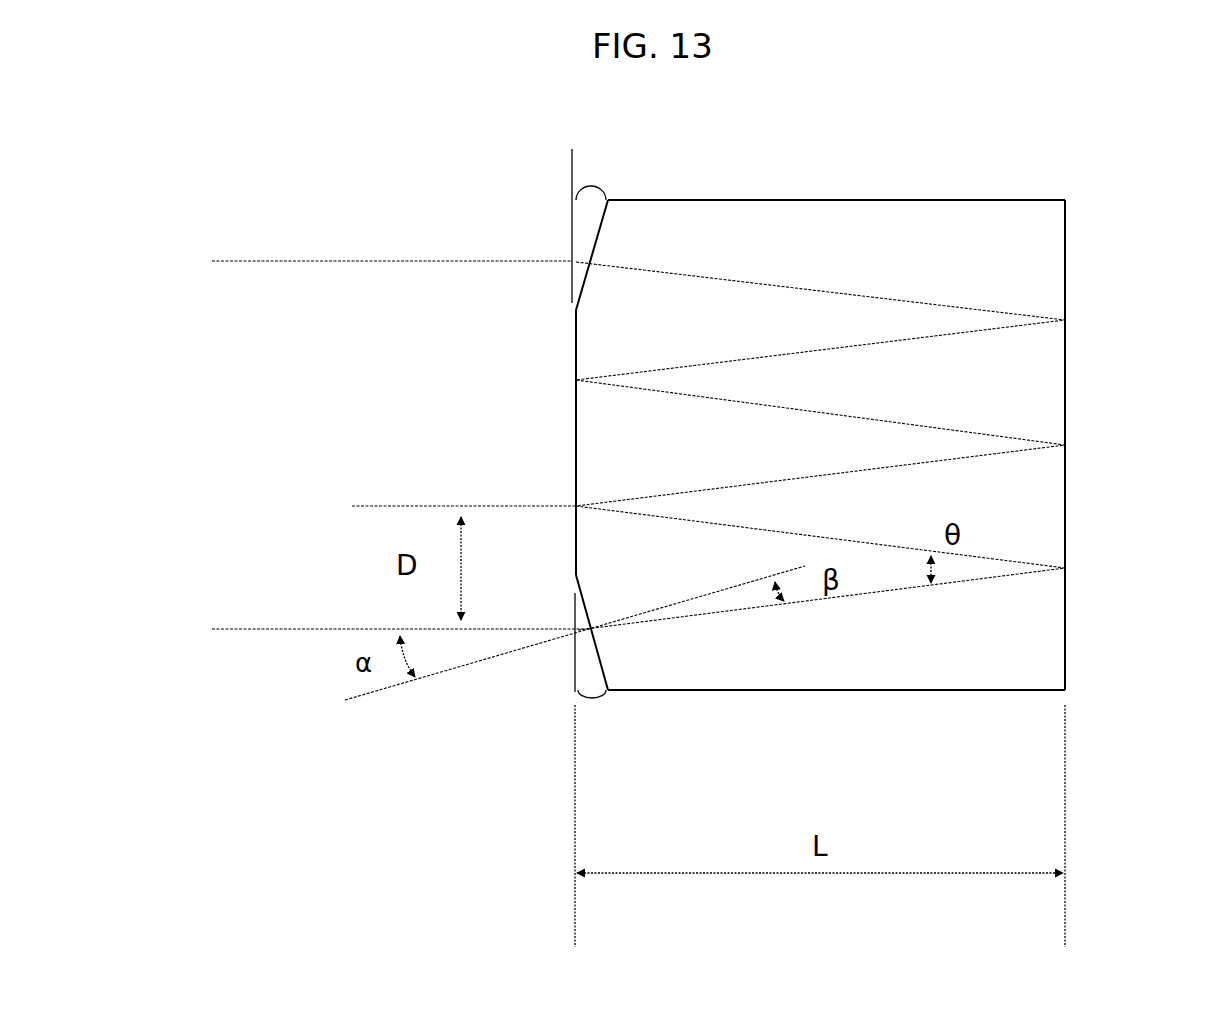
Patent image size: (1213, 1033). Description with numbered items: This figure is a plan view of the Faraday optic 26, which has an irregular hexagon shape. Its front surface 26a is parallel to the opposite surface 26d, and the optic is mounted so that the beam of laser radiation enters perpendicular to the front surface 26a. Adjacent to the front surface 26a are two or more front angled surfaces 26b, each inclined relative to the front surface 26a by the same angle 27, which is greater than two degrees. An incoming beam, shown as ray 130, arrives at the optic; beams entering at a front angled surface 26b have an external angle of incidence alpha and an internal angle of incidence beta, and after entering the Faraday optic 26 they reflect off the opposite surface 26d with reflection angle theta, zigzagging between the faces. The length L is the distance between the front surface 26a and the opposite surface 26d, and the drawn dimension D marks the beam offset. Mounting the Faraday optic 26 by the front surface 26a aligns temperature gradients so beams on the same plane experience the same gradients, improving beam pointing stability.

The Faraday optic 26 is at (1017, 199).
The front surface 26a is at (574, 440).
The front angled surfaces 26b is at (574, 310).
The opposite surface 26d is at (1066, 467).
The angle 27 is at (600, 188).
The incident light ray 130 is at (265, 629).